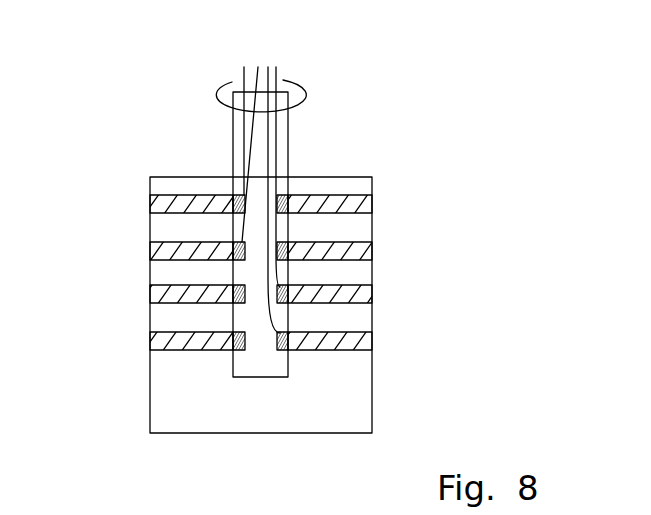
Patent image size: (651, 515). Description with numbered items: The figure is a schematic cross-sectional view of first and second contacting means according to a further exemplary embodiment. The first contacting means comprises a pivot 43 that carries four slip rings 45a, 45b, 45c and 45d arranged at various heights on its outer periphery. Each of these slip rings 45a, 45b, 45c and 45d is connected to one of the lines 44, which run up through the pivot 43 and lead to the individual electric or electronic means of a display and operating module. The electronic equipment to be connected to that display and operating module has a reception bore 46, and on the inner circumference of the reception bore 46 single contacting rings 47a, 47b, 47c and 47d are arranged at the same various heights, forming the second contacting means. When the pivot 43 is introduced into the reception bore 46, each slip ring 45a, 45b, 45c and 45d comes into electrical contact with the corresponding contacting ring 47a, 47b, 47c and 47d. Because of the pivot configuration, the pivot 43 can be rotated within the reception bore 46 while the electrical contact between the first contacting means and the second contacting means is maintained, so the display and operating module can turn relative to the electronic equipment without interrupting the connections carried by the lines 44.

The pivot 43 is at (292, 152).
The lines 44 is at (267, 77).
The slip ring 45a is at (232, 210).
The slip ring 45b is at (232, 252).
The slip ring 45c is at (232, 303).
The slip ring 45d is at (235, 347).
The reception bore 46 is at (328, 188).
The contacting ring 47a is at (357, 205).
The contacting ring 47b is at (360, 248).
The contacting ring 47c is at (363, 292).
The contacting ring 47d is at (360, 338).